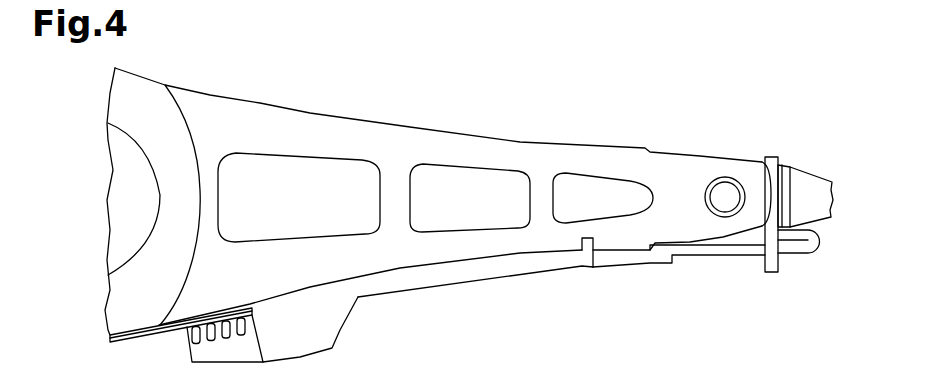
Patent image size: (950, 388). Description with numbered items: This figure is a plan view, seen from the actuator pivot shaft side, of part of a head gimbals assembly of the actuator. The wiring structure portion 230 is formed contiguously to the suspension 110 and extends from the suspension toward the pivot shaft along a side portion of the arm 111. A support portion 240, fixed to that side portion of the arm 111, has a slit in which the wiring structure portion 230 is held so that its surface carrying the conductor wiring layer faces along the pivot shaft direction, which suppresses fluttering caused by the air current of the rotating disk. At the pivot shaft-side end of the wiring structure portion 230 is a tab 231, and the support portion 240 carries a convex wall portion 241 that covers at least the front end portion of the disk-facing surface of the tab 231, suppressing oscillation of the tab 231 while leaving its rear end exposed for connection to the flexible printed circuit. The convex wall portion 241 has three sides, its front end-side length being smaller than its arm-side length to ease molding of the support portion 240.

The suspension 110 is at (810, 183).
The arm 111 is at (513, 143).
The wiring structure portion 230 is at (650, 263).
The tab 231 is at (200, 352).
The support portion 240 is at (485, 270).
The convex wall portion 241 is at (333, 327).